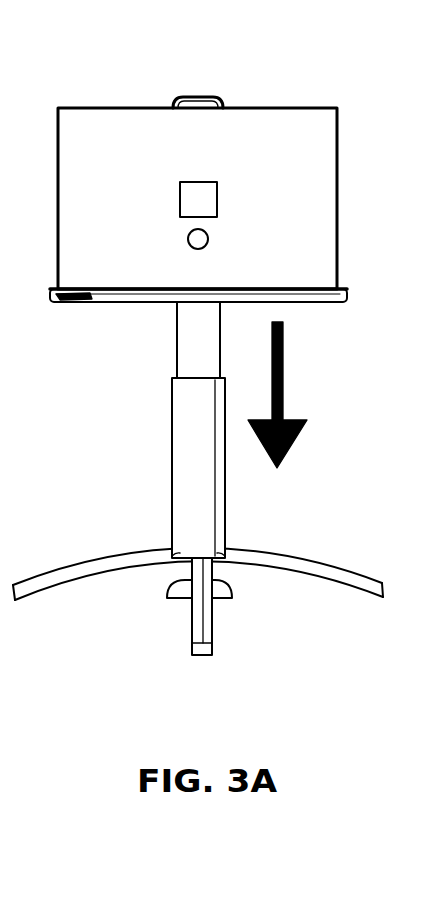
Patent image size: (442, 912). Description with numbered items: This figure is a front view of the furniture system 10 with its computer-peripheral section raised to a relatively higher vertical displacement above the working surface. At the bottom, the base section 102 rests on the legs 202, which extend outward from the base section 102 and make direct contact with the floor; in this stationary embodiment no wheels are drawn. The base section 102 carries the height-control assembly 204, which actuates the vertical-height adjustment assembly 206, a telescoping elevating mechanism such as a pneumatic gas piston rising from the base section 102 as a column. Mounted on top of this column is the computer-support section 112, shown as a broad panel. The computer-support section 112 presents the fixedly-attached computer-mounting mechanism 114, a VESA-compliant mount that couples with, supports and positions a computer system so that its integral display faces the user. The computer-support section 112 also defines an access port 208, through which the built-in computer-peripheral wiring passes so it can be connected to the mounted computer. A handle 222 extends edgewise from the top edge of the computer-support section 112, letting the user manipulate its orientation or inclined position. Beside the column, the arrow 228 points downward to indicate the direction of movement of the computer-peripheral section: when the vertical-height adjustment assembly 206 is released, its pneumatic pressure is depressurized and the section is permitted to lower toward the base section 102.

The ventilator / medical device assembly 10 is at (227, 368).
The base section 102 is at (225, 525).
The computer-support section 112 is at (120, 122).
The fixedly-attached computer-mounting mechanism 114 is at (220, 200).
The legs 202 is at (28, 600).
The height-control assembly 204 is at (210, 598).
The vertical-height adjustment assembly 206 is at (177, 335).
The access port 208 is at (208, 239).
The handle 222 is at (203, 97).
The arrow 228 is at (283, 373).